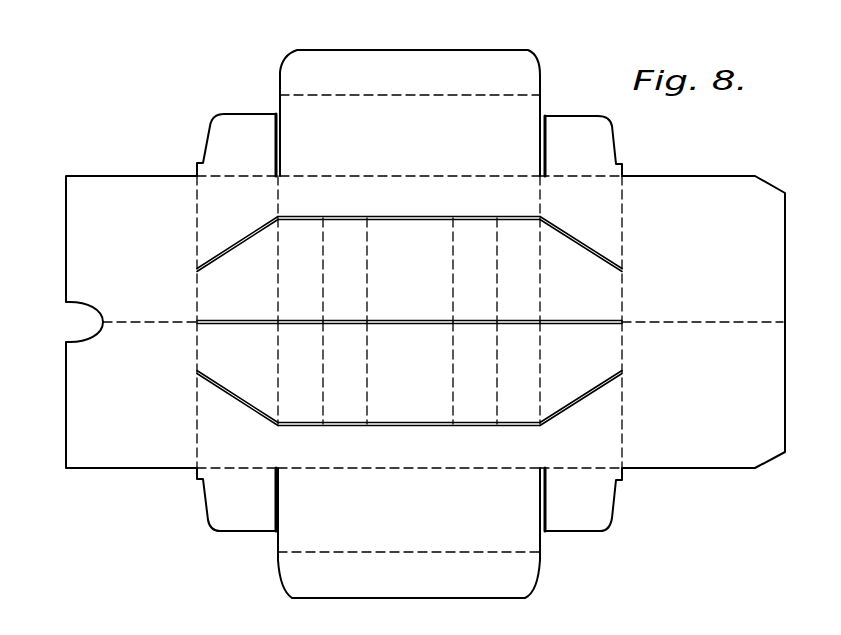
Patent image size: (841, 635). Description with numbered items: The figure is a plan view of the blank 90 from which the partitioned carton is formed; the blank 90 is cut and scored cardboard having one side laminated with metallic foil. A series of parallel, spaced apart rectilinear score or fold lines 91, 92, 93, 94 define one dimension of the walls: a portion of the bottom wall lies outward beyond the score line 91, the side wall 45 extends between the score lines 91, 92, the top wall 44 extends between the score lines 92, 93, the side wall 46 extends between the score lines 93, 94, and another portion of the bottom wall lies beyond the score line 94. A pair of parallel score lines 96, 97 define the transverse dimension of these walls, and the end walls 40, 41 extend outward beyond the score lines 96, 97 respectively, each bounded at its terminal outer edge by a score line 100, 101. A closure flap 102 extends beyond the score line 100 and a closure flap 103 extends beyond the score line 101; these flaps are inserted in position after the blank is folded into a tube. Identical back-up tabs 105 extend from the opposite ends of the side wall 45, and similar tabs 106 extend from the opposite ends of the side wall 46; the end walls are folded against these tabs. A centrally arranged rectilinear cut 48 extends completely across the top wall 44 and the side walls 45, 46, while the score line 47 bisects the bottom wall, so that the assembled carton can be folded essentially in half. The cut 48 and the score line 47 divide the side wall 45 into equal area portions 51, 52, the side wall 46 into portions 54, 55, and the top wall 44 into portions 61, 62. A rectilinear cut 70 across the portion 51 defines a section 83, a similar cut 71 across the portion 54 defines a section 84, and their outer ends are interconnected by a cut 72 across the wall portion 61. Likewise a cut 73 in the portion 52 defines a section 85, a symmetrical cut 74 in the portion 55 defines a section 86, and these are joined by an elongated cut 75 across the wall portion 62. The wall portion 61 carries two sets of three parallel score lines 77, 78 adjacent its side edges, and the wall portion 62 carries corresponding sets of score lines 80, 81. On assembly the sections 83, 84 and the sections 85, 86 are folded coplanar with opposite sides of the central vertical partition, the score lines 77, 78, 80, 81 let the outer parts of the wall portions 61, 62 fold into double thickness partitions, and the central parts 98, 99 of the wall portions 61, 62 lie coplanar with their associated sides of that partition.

The end wall 40 is at (381, 524).
The end wall 41 is at (384, 142).
The top wall 44 is at (351, 182).
The side wall 45 is at (211, 184).
The side wall 46 is at (580, 185).
The score line 47 is at (137, 320).
The cut 48 is at (431, 319).
The rectangular portion 51 is at (225, 377).
The rectangular portion 52 is at (226, 227).
The portion 54 is at (573, 380).
The portion 55 is at (578, 234).
The wall portion 61 is at (400, 395).
The wall portion 62 is at (409, 270).
The rectilinear cut 70 is at (225, 395).
The cut 71 is at (569, 407).
The cut 72 is at (388, 428).
The cut 73 is at (222, 258).
The cut 74 is at (583, 247).
The elongated rectilinear cut 75 is at (396, 217).
The score lines 77 is at (323, 330).
The score lines 78 is at (497, 345).
The score lines 80 is at (323, 242).
The score lines 81 is at (497, 232).
The section 83 is at (197, 370).
The section 84 is at (608, 352).
The wall section 85 is at (207, 300).
The section 86 is at (608, 306).
The blank 90 is at (585, 45).
The score line 91 is at (197, 193).
The score line 92 is at (280, 198).
The score line 93 is at (541, 198).
The score line 94 is at (622, 196).
The score line 96 is at (444, 470).
The score line 97 is at (446, 178).
The central part 98 is at (380, 398).
The central part 99 is at (383, 235).
The score line 100 is at (430, 551).
The score line 101 is at (432, 93).
The closure flap 102 is at (338, 587).
The closure flap 103 is at (373, 62).
The back-up flaps 105 is at (228, 123).
The back-up flaps 106 is at (572, 125).